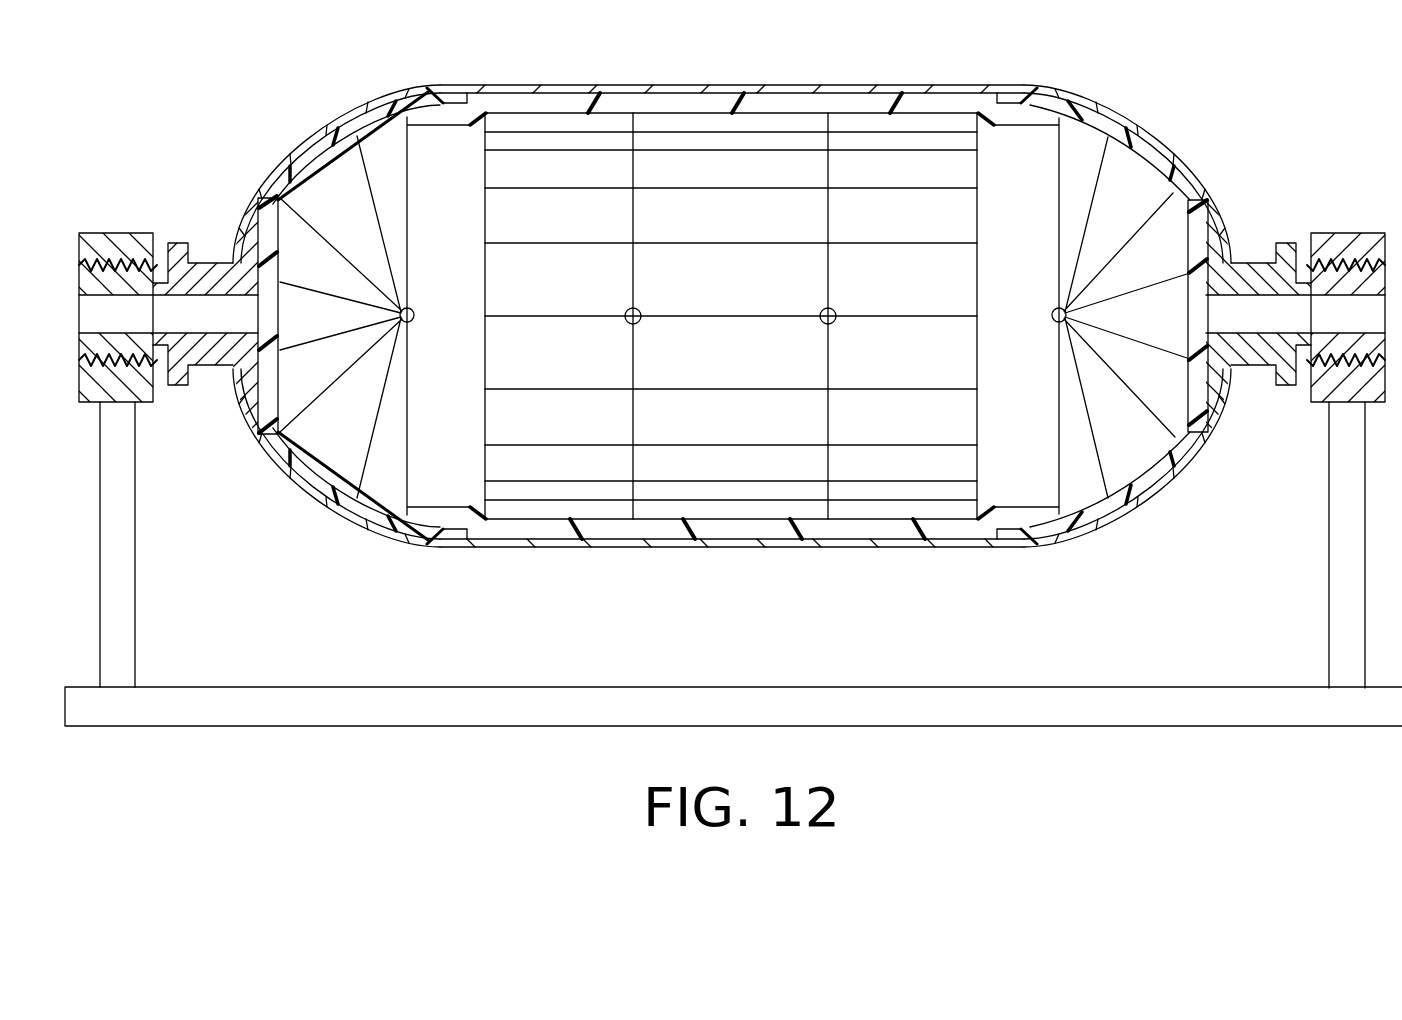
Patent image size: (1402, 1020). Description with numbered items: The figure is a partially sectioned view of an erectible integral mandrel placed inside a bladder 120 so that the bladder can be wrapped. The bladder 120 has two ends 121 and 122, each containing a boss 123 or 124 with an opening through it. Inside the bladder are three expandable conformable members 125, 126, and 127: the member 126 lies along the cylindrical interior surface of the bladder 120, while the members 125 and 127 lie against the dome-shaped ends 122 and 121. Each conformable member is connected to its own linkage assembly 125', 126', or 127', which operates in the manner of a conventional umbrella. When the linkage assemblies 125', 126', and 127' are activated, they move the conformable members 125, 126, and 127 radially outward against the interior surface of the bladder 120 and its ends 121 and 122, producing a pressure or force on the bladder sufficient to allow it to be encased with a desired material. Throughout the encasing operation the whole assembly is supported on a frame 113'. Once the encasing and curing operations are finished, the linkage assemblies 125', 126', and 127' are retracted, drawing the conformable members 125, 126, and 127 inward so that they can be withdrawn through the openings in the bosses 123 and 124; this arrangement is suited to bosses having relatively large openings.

The frame 113' is at (733, 564).
The bladder 120 is at (770, 85).
The end 121 is at (1207, 187).
The end 122 is at (272, 178).
The boss 123 is at (1255, 378).
The boss 124 is at (177, 384).
The expandable conformable member 125 is at (372, 306).
The linkage assembly 125' is at (376, 317).
The expandable conformable member 126 is at (731, 287).
The linkage assembly 126' is at (730, 290).
The expandable conformable member 127 is at (1099, 335).
The linkage assembly 127' is at (1089, 317).